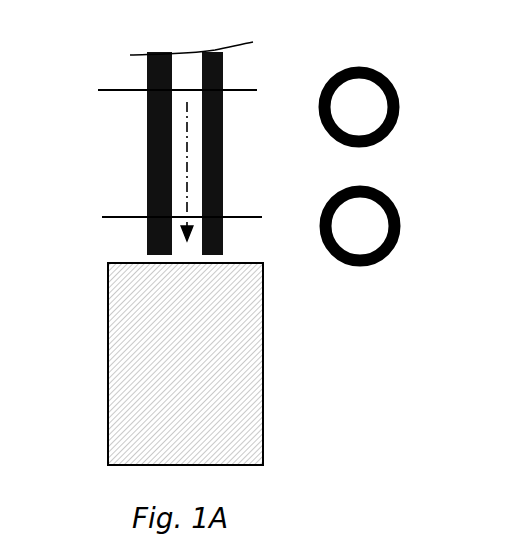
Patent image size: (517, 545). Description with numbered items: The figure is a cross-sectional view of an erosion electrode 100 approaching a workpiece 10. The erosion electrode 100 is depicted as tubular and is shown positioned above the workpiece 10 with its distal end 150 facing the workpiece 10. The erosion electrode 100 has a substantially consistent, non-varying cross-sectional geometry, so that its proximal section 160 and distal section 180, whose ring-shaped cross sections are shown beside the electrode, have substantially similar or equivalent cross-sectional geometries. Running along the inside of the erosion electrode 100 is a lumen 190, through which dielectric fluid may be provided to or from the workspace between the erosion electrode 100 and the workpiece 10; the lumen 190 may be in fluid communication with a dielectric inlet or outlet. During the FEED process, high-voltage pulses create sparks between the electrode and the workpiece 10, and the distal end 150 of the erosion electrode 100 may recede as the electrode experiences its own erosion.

The workpiece 10 is at (115, 373).
The erosion electrode 100 is at (145, 120).
The distal end 150 is at (147, 250).
The proximal section 160 is at (115, 90).
The distal section 180 is at (115, 217).
The lumen 190 is at (147, 155).